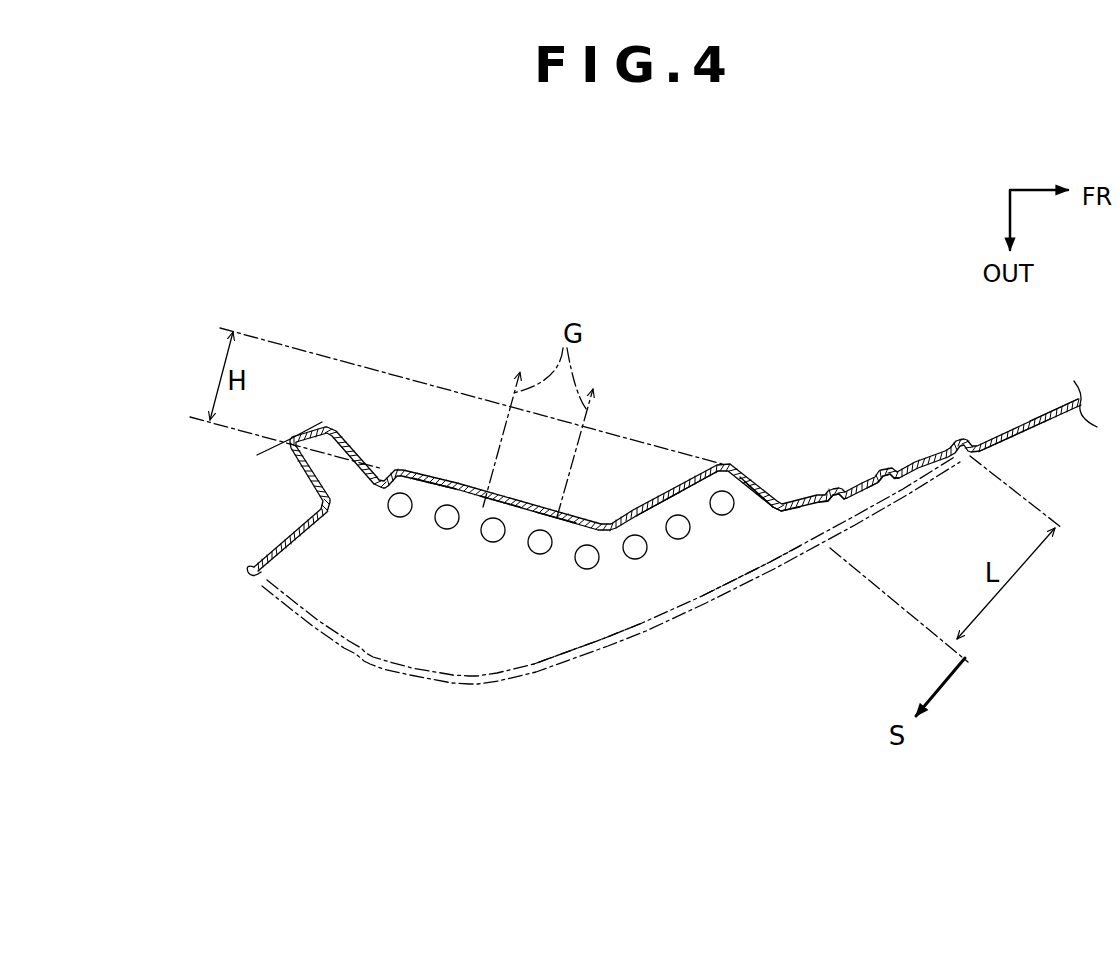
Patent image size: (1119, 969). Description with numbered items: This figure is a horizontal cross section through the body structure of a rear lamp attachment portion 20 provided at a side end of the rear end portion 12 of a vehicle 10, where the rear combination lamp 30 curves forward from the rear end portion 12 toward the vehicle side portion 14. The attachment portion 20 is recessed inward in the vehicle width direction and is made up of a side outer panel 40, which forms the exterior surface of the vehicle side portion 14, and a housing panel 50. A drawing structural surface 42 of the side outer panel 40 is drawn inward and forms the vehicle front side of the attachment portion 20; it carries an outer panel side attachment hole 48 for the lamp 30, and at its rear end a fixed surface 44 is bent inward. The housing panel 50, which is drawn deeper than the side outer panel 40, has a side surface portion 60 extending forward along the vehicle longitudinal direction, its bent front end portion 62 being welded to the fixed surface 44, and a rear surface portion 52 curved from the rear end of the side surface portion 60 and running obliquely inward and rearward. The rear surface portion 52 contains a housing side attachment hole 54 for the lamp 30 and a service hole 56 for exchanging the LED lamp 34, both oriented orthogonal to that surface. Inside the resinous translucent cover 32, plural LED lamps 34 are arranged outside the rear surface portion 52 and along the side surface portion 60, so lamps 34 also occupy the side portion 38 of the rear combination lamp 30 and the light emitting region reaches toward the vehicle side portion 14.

The vehicle 10 is at (758, 333).
The rear end portion 12 is at (213, 477).
The vehicle side portion 14 is at (1037, 426).
The rear lamp attachment portion 20 is at (318, 548).
The rear combination lamp 30 is at (692, 620).
The translucent cover 32 is at (615, 648).
The LED lamp 34 is at (482, 557).
The side portion 38 is at (752, 587).
The side outer panel 40 is at (1022, 419).
The drawing structural surface 42 is at (816, 492).
The fixed surface 44 is at (764, 496).
The outer panel side attachment hole 48 is at (862, 475).
The housing panel 50 is at (651, 496).
The rear surface portion 52 is at (430, 479).
The housing side attachment hole 54 is at (556, 510).
The service hole 56 is at (501, 501).
The side surface portion 60 is at (688, 481).
The front end portion 62 is at (759, 507).